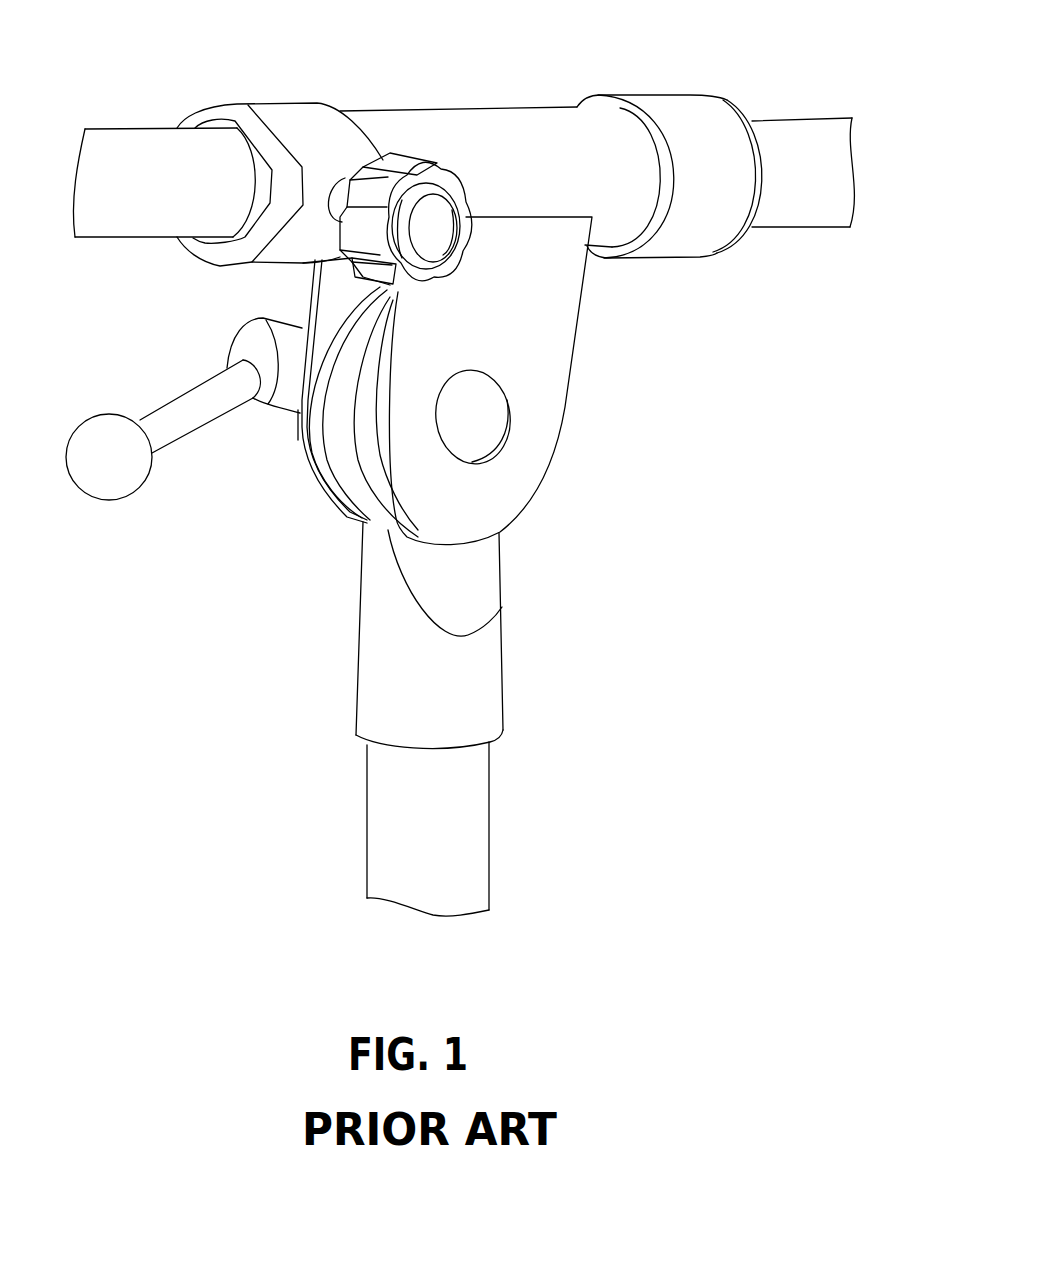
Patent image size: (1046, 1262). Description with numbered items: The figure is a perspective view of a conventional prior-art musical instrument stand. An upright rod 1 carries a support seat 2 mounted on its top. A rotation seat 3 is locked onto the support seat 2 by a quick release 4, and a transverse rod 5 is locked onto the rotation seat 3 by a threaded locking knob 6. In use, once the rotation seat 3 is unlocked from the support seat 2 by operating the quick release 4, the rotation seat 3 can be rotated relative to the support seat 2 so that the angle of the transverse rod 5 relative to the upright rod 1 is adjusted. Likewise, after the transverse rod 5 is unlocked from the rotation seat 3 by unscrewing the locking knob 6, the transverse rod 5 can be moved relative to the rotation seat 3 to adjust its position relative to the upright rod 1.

The upright rod 1 is at (453, 808).
The support seat 2 is at (483, 677).
The rotation seat 3 is at (548, 356).
The quick release 4 is at (268, 403).
The transverse rod 5 is at (798, 122).
The threaded locking knob 6 is at (421, 156).